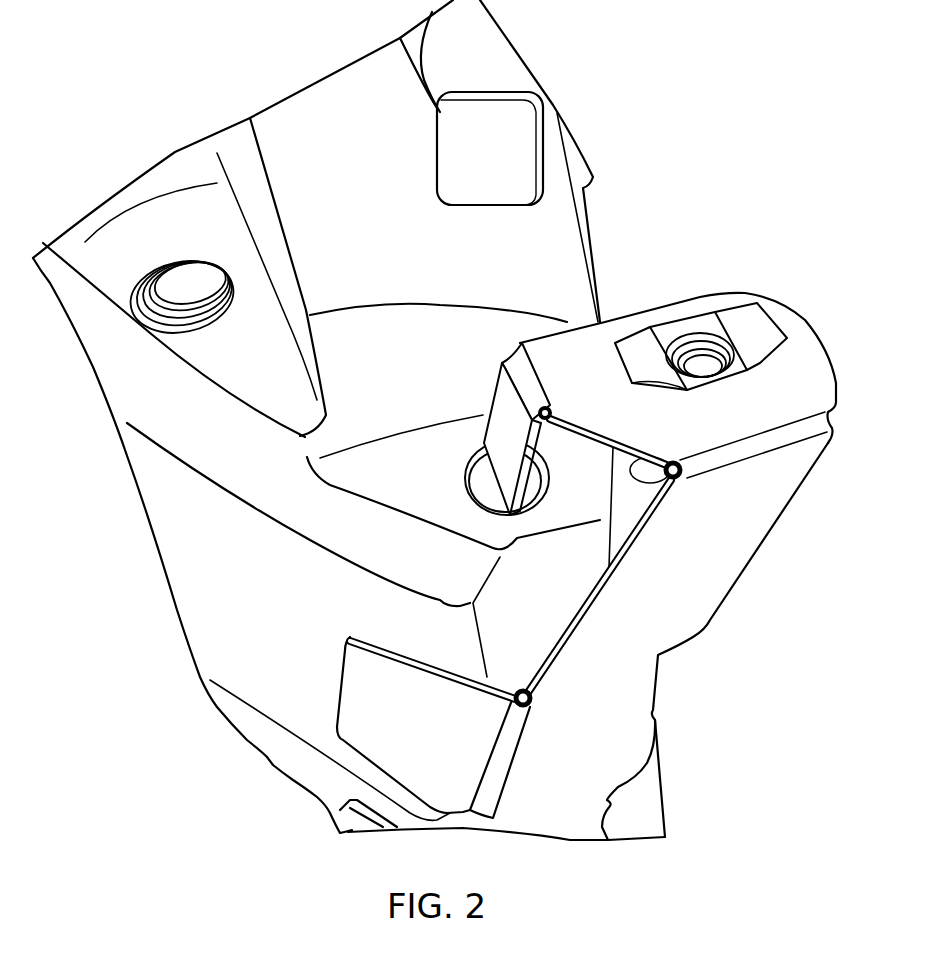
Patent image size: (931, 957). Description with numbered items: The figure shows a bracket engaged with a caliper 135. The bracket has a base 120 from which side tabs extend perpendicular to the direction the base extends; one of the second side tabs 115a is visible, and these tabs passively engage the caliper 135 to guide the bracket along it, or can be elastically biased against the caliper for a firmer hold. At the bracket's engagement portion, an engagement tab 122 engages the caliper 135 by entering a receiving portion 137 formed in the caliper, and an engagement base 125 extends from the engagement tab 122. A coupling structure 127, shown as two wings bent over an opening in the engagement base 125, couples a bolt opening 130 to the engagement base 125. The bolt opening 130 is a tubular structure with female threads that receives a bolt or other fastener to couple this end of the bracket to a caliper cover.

The caliper 135 is at (555, 247).
The second side tab 115a is at (350, 687).
The receiving portion 137 is at (480, 490).
The base 120 is at (743, 545).
The engagement base 125 is at (807, 345).
The coupling structure 127 is at (640, 337).
The bolt opening 130 is at (703, 337).
The engagement tab 122 is at (503, 413).